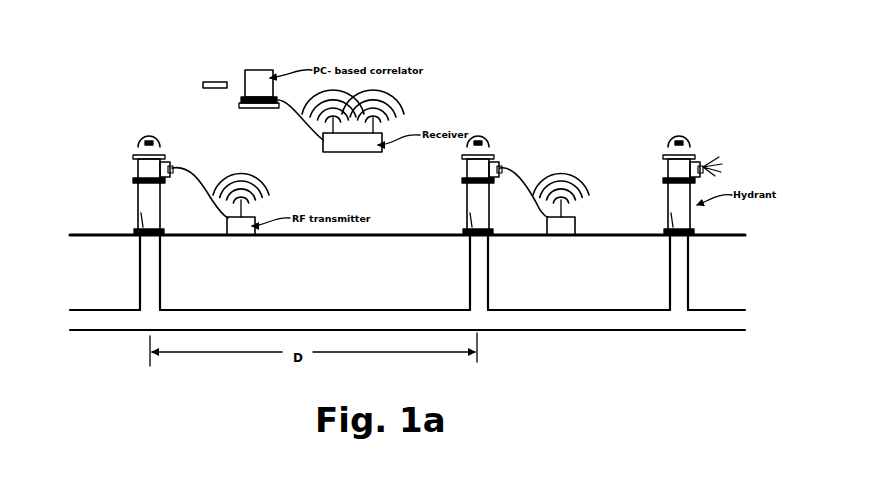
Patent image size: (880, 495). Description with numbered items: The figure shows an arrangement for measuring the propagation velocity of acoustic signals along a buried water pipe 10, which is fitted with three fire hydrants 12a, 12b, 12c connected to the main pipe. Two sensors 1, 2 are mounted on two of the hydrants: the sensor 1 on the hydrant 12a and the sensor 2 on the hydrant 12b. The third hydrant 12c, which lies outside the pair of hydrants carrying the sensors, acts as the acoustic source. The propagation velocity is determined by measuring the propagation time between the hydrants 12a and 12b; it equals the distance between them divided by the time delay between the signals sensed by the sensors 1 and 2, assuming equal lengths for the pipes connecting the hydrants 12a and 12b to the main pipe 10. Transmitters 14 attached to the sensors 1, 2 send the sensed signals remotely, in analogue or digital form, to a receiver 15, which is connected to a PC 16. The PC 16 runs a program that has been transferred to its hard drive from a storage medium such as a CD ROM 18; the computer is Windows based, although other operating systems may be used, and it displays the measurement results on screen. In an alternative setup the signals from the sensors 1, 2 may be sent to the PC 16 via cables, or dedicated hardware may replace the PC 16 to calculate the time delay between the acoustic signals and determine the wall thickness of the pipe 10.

The sensor 1 is at (174, 166).
The sensor 2 is at (500, 167).
The buried water pipe 10 is at (367, 308).
The hydrant 12a is at (130, 237).
The hydrant 12b is at (425, 235).
The hydrant 12c is at (690, 237).
The transmitter 14 is at (235, 238).
The receiver 15 is at (340, 153).
The PC 16 is at (252, 72).
The CD ROM 18 is at (218, 80).